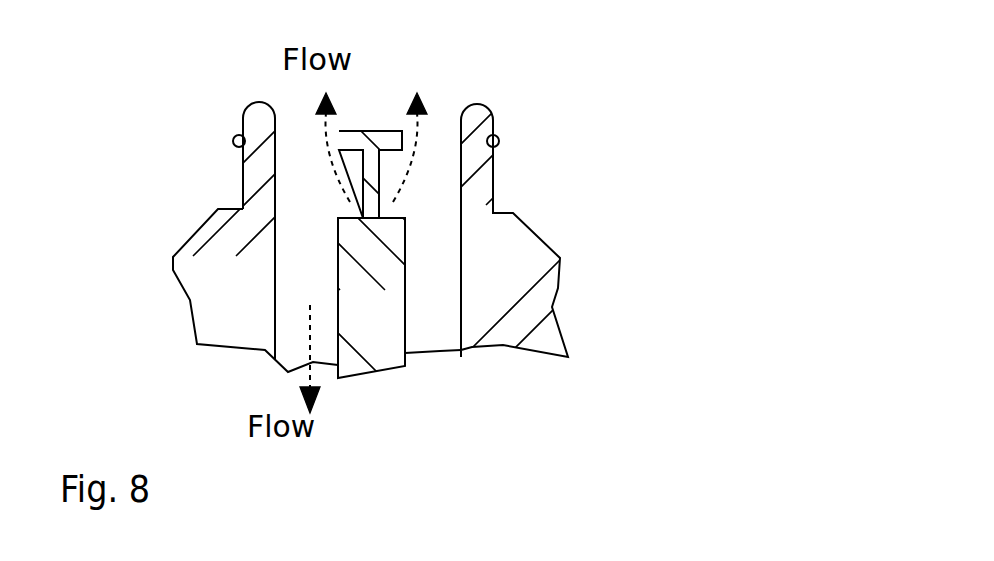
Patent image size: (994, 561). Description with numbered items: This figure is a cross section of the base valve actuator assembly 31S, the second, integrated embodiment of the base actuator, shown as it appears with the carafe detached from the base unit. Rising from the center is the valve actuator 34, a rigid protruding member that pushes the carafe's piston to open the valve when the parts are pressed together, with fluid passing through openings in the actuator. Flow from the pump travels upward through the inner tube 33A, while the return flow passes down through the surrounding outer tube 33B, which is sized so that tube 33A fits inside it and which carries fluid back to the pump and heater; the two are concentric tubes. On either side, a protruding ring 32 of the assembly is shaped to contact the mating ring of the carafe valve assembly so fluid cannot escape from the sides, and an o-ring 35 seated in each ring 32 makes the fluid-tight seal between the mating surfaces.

The base valve actuator assembly 31S is at (215, 84).
The protruding ring 32 is at (483, 182).
The tube 33A is at (373, 363).
The tube 33B is at (433, 312).
The valve actuator 34 is at (377, 131).
The o-ring 35 is at (233, 143).